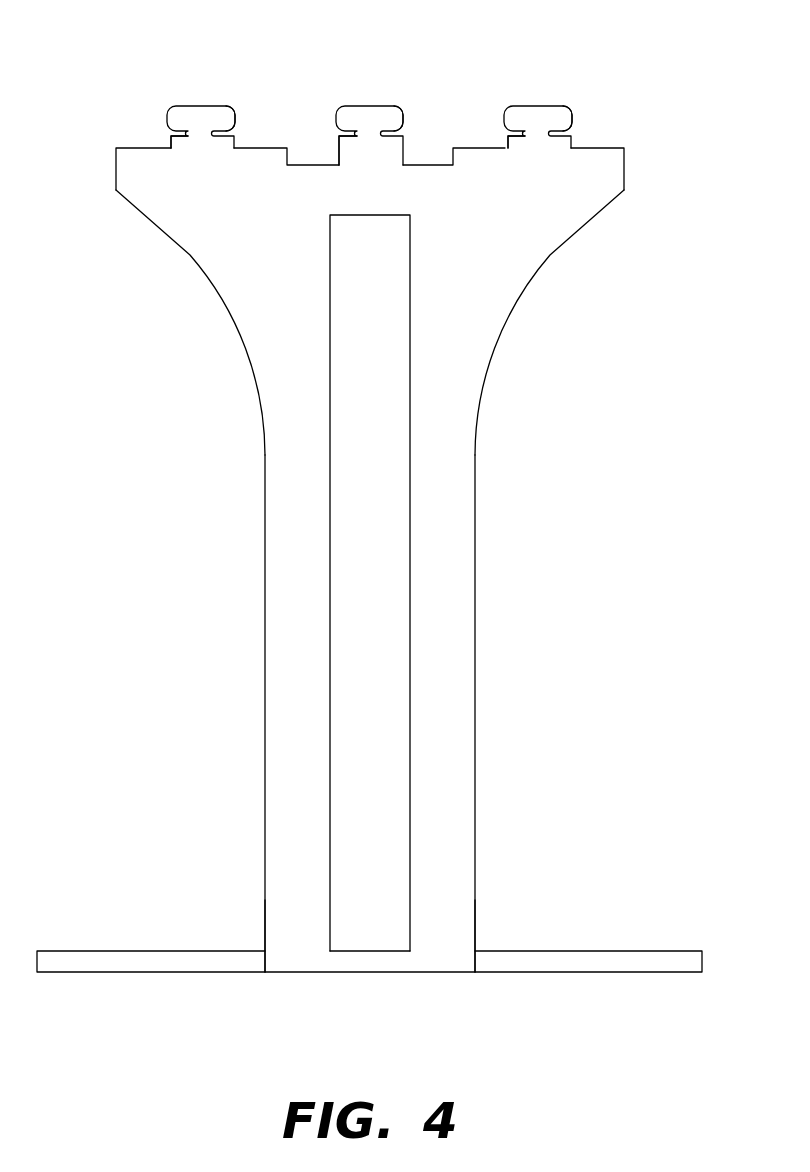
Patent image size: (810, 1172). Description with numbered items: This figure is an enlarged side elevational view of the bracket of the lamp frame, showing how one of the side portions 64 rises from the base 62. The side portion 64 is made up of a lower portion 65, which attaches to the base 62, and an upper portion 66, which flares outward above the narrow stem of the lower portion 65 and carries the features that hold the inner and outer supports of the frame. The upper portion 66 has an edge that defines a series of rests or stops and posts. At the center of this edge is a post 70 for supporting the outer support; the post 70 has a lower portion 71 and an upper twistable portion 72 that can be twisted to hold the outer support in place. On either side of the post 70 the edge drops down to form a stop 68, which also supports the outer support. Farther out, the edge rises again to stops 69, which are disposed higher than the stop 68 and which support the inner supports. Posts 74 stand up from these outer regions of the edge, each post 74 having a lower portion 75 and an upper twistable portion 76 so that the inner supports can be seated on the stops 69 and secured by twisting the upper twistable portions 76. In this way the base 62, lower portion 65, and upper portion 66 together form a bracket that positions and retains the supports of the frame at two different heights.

The base 62 is at (624, 950).
The side portions 64 is at (475, 594).
The lower portion 65 is at (475, 898).
The upper portion 66 is at (534, 253).
The stops 68 is at (302, 164).
The stops 69 is at (131, 148).
The post 70 is at (355, 105).
The lower portion 71 is at (339, 138).
The upper twistable portion 72 is at (404, 112).
The posts 74 is at (188, 105).
The lower portion 75 is at (171, 140).
The upper twistable portion 76 is at (236, 112).